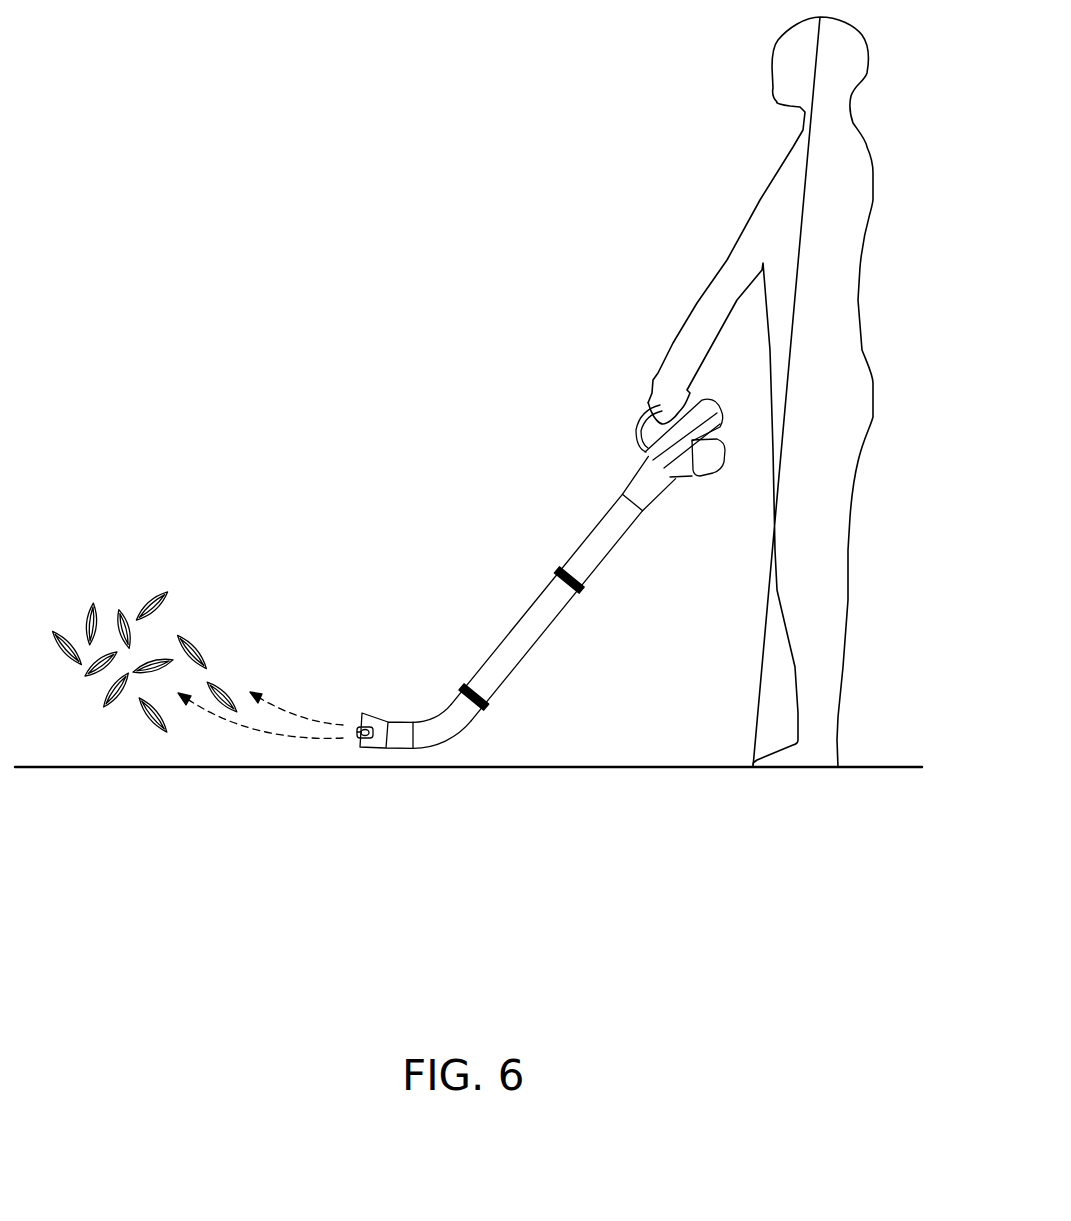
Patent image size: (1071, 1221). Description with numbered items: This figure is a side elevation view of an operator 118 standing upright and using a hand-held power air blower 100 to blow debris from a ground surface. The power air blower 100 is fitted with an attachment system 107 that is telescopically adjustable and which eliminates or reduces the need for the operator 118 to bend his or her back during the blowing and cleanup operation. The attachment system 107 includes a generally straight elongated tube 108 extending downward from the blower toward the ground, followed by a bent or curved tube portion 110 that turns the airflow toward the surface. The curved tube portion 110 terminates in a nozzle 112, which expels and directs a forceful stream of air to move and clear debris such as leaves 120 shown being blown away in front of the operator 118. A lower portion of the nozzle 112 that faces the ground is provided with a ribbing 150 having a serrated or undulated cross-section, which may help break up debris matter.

The power air blower 100 is at (511, 607).
The attachment system 107 is at (525, 607).
The elongated tube 108 is at (534, 654).
The bent or curved tube portion 110 is at (475, 719).
The nozzle 112 is at (373, 713).
The operator 118 is at (856, 125).
The leaves 120 is at (162, 605).
The ribbing 150 is at (360, 738).